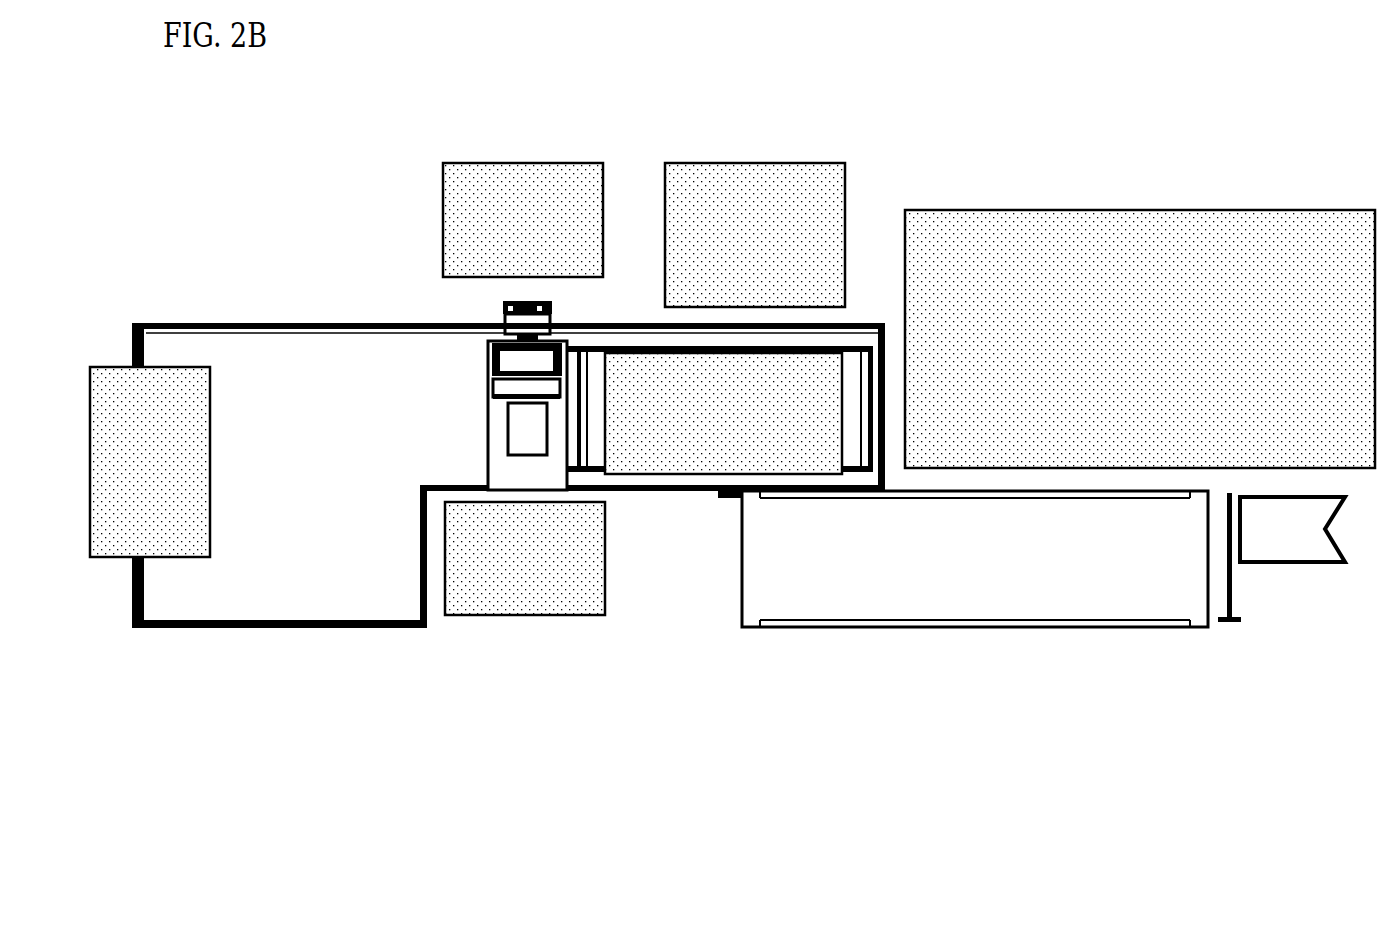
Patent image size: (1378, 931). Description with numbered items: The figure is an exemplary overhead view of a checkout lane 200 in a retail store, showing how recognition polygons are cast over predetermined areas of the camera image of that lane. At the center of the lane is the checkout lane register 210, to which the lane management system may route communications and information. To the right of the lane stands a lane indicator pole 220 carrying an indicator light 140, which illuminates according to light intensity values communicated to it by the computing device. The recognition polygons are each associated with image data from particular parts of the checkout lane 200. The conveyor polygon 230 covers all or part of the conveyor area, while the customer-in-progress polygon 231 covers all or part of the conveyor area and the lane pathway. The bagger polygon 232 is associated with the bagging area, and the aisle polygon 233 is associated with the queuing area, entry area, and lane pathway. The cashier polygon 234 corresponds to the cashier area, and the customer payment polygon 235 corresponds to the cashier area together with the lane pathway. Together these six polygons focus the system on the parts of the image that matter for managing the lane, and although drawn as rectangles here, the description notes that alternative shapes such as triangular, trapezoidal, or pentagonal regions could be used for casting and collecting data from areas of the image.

The checkout lane 200 is at (200, 96).
The checkout lane register 210 is at (470, 368).
The lane indicator pole 220 is at (1281, 584).
The indicator light 140 is at (1292, 529).
The conveyor polygon 230 is at (723, 413).
The customer-in-progress polygon 231 is at (755, 235).
The bagger polygon 232 is at (150, 462).
The aisle polygon 233 is at (1140, 339).
The cashier polygon 234 is at (525, 558).
The customer payment polygon 235 is at (523, 220).